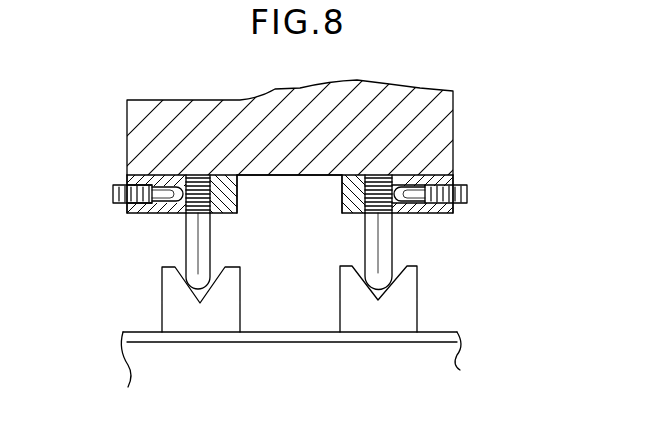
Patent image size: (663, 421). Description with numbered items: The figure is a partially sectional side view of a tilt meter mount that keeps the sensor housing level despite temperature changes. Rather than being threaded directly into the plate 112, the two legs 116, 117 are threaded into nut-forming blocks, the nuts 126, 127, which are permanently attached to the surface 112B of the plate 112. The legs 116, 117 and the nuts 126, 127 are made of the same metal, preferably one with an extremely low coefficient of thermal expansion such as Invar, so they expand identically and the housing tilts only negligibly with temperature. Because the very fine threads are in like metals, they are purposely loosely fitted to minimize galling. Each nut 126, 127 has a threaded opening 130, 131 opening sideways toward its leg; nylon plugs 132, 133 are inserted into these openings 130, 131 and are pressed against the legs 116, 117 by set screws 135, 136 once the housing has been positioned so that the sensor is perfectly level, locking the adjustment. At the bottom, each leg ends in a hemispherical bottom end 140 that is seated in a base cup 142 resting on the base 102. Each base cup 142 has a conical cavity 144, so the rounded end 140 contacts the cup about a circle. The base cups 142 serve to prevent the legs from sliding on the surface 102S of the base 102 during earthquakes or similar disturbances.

The plate 112 is at (415, 88).
The surface of plate 112B is at (259, 178).
The leg 116 is at (190, 239).
The leg 117 is at (377, 248).
The nut 126 is at (238, 214).
The nut 127 is at (350, 215).
The threaded opening 130 is at (135, 214).
The threaded opening 131 is at (456, 203).
The nylon plug 132 is at (167, 190).
The nylon plug 133 is at (400, 187).
The set screw 135 is at (113, 197).
The set screw 136 is at (467, 188).
The hemispherical bottom end 140 is at (200, 288).
The conical cavity 144 is at (383, 273).
The base 102 is at (460, 328).
The surface 102S is at (283, 329).
The base cup 142 is at (208, 327).